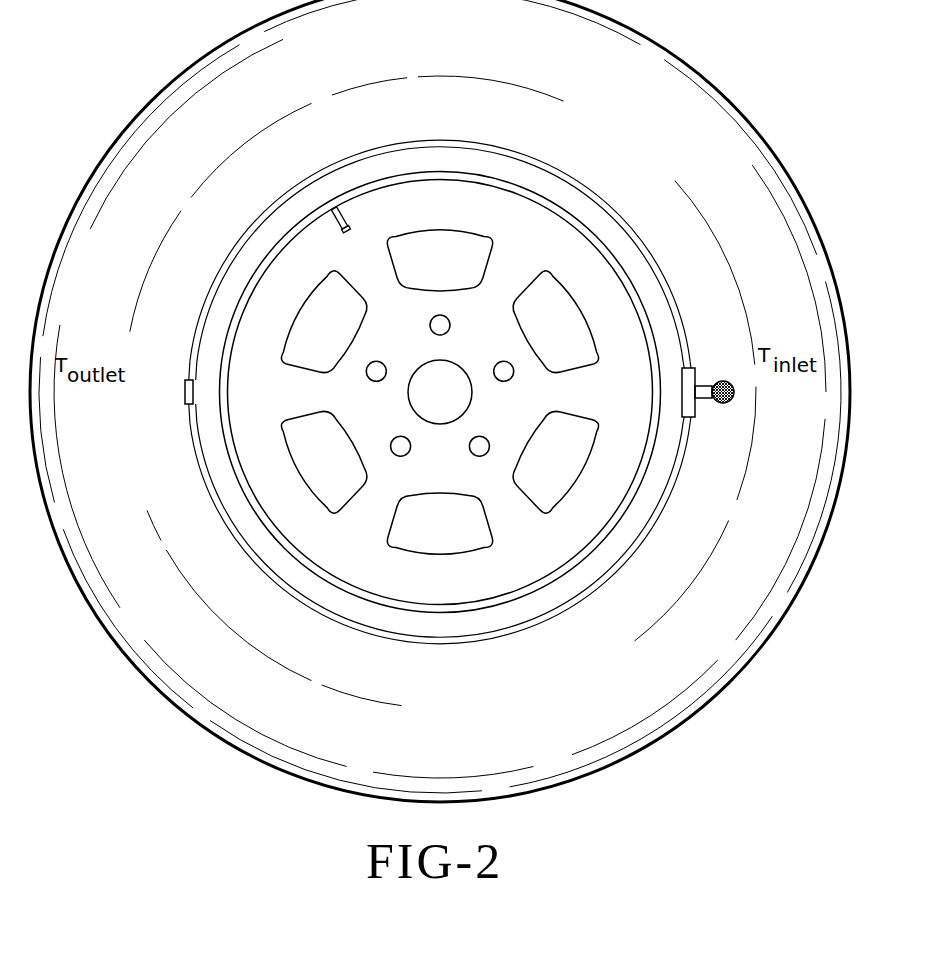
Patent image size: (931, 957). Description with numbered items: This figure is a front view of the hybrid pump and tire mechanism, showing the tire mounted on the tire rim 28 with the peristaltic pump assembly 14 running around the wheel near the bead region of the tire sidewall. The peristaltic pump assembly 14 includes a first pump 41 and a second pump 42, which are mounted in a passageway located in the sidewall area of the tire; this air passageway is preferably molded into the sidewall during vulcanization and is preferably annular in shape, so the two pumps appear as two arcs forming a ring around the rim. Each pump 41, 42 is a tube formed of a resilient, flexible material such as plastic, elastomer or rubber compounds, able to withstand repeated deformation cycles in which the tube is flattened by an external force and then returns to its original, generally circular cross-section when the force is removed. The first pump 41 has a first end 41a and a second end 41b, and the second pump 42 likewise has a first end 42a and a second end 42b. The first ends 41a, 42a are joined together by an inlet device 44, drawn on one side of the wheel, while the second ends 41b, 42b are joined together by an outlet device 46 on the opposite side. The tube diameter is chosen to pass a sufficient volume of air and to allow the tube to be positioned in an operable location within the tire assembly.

The peristaltic pump assembly 14 is at (445, 391).
The tire rim 28 is at (455, 476).
The first pump 41 is at (535, 160).
The first end of first pump 41a is at (688, 368).
The second end of first pump 41b is at (187, 380).
The second pump 42 is at (497, 638).
The first end of second pump 42a is at (688, 418).
The second end of second pump 42b is at (188, 405).
The inlet device 44 is at (731, 401).
The outlet device 46 is at (186, 396).